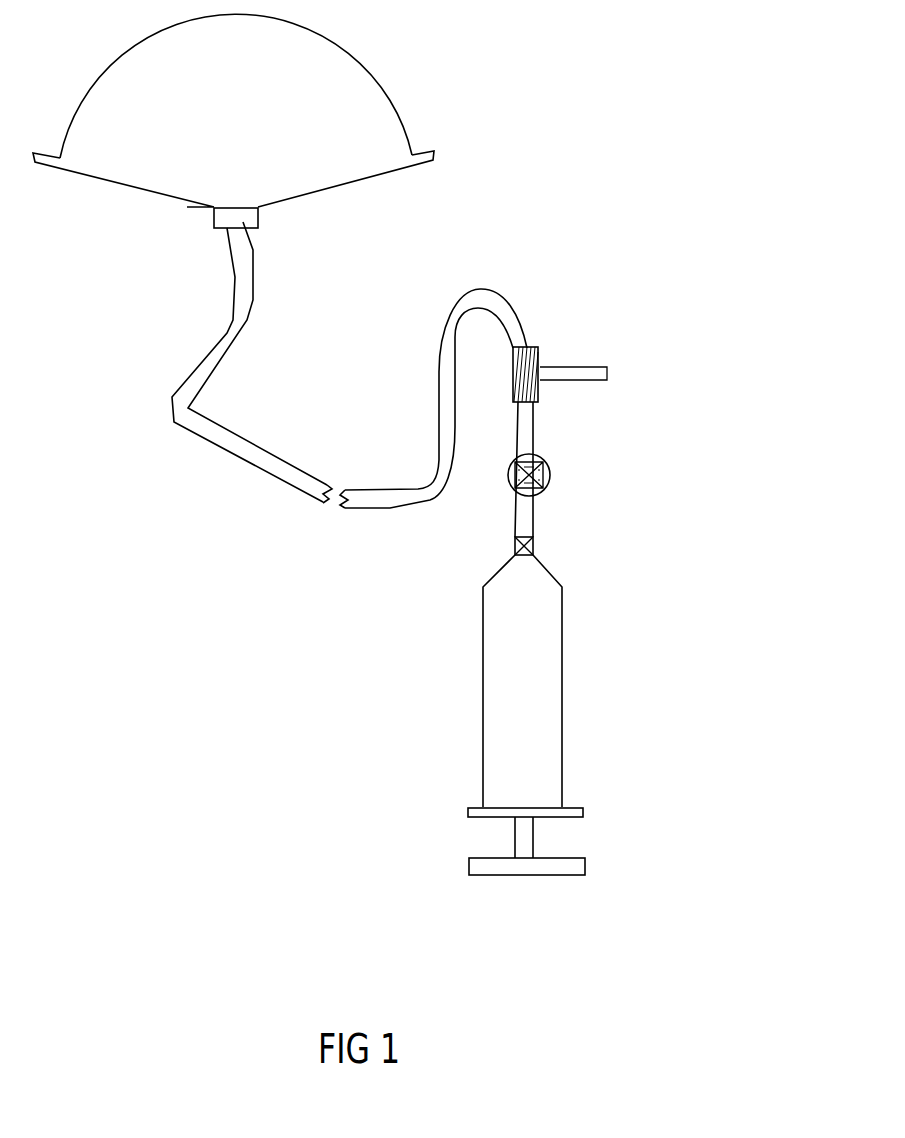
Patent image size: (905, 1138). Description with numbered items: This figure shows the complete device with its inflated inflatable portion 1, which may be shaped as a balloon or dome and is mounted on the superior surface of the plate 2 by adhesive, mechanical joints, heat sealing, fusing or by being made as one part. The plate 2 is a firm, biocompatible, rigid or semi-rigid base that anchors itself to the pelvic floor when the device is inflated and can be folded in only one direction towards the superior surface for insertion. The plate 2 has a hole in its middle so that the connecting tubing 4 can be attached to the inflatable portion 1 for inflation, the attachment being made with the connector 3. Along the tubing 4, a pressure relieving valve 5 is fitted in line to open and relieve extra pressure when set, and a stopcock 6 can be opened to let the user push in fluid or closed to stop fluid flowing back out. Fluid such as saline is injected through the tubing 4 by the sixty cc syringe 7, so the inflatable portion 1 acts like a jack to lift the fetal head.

The inflatable portion 1 is at (386, 90).
The plate 2 is at (368, 178).
The connector 3 is at (262, 228).
The connecting tubing 4 is at (512, 302).
The pressure relieving valve 5 is at (542, 372).
The stopcock 6 is at (532, 475).
The syringe 7 is at (565, 645).